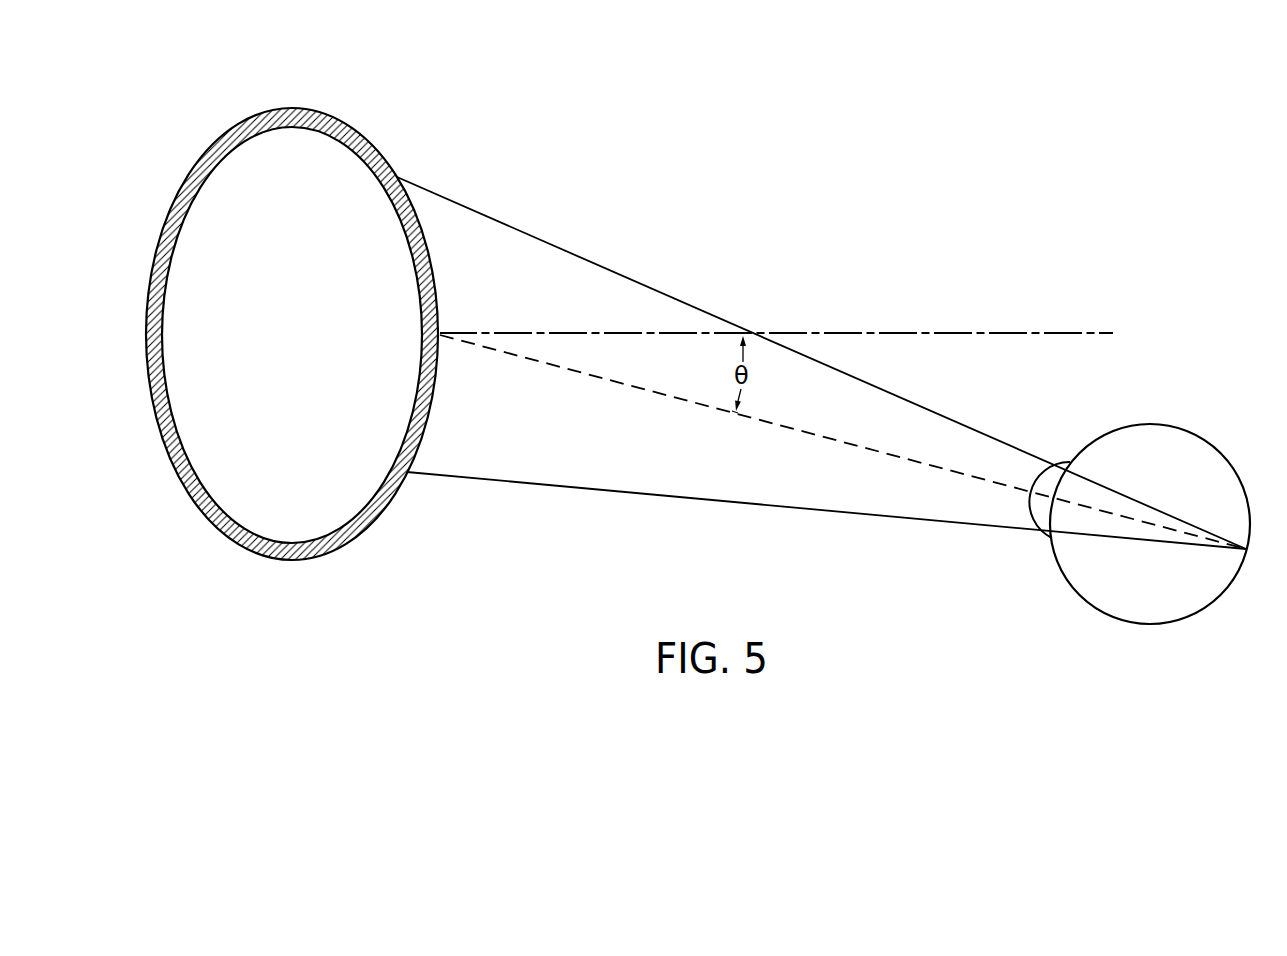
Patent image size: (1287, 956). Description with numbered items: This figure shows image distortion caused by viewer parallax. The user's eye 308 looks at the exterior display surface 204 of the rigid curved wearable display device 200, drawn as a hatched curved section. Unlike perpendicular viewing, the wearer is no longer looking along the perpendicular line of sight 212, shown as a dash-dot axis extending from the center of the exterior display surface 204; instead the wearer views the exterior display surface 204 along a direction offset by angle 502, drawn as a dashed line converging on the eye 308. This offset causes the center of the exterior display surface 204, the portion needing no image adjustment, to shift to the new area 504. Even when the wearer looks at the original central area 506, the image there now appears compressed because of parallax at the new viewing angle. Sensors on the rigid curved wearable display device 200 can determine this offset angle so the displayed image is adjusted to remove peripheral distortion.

The rigid curved wearable display device 200 is at (318, 346).
The exterior display surface 204 is at (328, 317).
The line of sight 212 is at (937, 333).
The eye 308 is at (1177, 602).
The angle 502 is at (759, 393).
The new area 504 is at (435, 402).
The original central area 506 is at (440, 333).